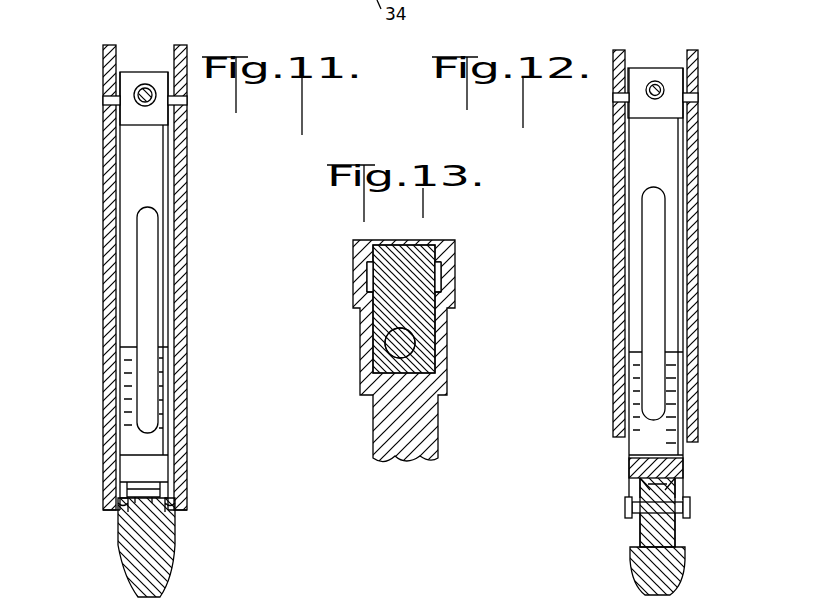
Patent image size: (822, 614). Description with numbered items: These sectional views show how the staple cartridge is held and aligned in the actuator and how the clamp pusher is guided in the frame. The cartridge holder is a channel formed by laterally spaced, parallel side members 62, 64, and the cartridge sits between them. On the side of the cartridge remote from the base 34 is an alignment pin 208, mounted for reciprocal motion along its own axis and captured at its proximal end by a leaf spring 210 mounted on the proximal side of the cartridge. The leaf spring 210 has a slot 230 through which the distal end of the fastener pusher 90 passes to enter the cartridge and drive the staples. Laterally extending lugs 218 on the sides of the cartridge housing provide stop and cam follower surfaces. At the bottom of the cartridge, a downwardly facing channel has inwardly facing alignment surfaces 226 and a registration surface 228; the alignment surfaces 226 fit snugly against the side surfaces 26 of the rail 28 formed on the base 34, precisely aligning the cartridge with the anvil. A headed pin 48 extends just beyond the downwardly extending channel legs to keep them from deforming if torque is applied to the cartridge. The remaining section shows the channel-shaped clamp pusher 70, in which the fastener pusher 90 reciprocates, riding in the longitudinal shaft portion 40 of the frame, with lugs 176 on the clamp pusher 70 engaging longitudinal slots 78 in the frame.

In FIG. 12, the side surfaces of rail 26 is at (638, 530).
In FIG. 11, the rail 28 is at (147, 487).
In FIG. 12, the rail 28 is at (690, 527).
In FIG. 11, the base 34 is at (165, 549).
In FIG. 12, the base 34 is at (672, 572).
In FIG. 13, the longitudinal shaft portion 40 is at (382, 434).
In FIG. 12, the headed pin 48 is at (626, 506).
In FIG. 11, the side member 62 is at (106, 297).
In FIG. 12, the side member 62 is at (616, 240).
In FIG. 11, the side member 64 is at (187, 327).
In FIG. 12, the side member 64 is at (690, 249).
In FIG. 13, the clamp pusher 70 is at (378, 318).
In FIG. 13, the longitudinal slots 78 is at (367, 264).
In FIG. 13, the fastener pusher 90 is at (415, 348).
In FIG. 13, the lugs 176 is at (367, 290).
In FIG. 11, the alignment pin 208 is at (146, 85).
In FIG. 12, the alignment pin 208 is at (658, 88).
In FIG. 11, the leaf spring 210 is at (131, 200).
In FIG. 12, the leaf spring 210 is at (672, 163).
In FIG. 11, the lugs 218 is at (110, 97).
In FIG. 12, the lugs 218 is at (613, 94).
In FIG. 11, the alignment surfaces 226 is at (122, 508).
In FIG. 12, the alignment surfaces 226 is at (640, 490).
In FIG. 12, the registration surface 228 is at (680, 461).
In FIG. 11, the slot 230 is at (147, 238).
In FIG. 12, the slot 230 is at (657, 290).